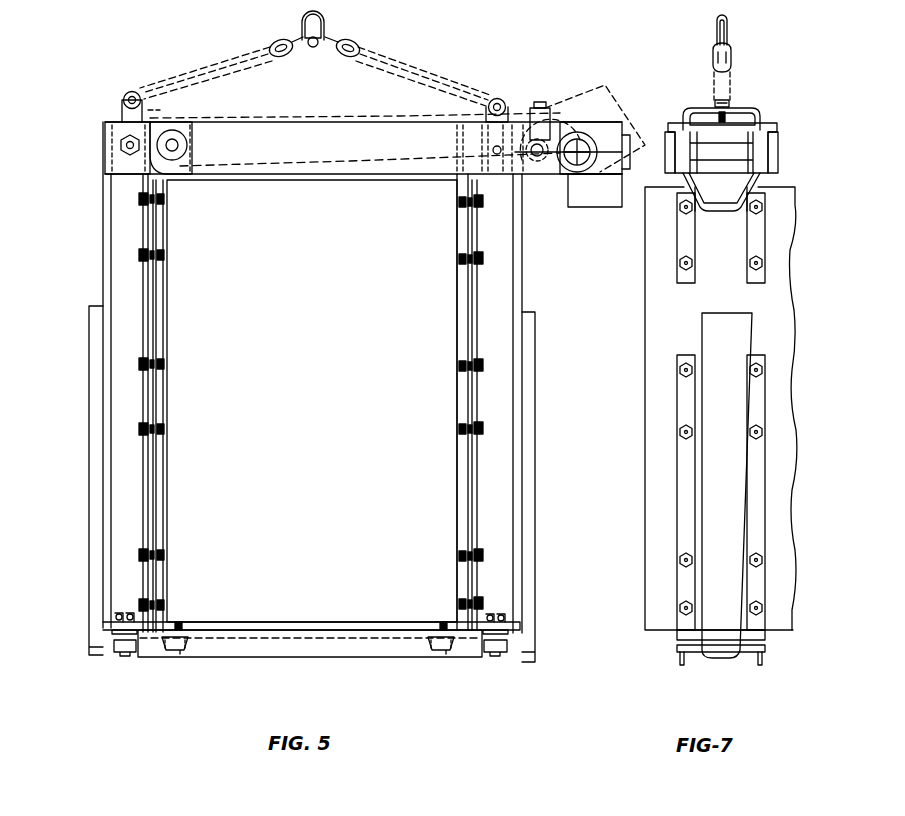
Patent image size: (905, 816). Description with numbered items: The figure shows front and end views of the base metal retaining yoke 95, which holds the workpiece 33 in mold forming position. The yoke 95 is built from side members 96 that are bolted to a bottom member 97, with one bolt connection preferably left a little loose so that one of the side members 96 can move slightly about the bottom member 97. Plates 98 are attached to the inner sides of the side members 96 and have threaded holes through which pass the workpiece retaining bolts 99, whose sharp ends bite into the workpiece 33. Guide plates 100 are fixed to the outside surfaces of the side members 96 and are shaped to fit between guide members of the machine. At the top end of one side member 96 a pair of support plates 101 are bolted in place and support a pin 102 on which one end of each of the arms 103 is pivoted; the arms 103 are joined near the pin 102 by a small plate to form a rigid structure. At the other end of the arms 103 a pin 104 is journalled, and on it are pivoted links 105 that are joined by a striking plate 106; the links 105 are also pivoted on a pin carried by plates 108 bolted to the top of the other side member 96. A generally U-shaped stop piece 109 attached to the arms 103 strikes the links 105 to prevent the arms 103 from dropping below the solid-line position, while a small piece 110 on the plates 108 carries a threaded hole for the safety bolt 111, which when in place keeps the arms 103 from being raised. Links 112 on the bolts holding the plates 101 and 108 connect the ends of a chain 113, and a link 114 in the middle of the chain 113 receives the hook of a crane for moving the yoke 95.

In FIG. 5, the workpiece 33 is at (450, 302).
In FIG. 5, the yoke 95 is at (100, 677).
In FIG. 5, the side members 96 is at (111, 506).
In FIG. 5, the bottom member 97 is at (370, 657).
In FIG. 5, the plates 98 is at (150, 514).
In FIG. 5, the workpiece retaining bolts 99 is at (476, 553).
In FIG. 7, the workpiece retaining bolts 99 is at (762, 431).
In FIG. 5, the guide plates 100 is at (100, 420).
In FIG. 7, the guide plates 100 is at (710, 477).
In FIG. 5, the support plates 101 is at (118, 118).
In FIG. 5, the pin 102 is at (174, 142).
In FIG. 5, the arms 103 is at (340, 123).
In FIG. 7, the arms 103 is at (762, 172).
In FIG. 5, the pin 104 is at (584, 144).
In FIG. 7, the pin 104 is at (710, 162).
In FIG. 5, the links 105 is at (640, 170).
In FIG. 7, the links 105 is at (775, 172).
In FIG. 5, the striking plate 106 is at (598, 207).
In FIG. 7, the striking plate 106 is at (780, 185).
In FIG. 5, the plates 108 is at (524, 178).
In FIG. 7, the plates 108 is at (758, 140).
In FIG. 5, the stop piece 109 is at (560, 118).
In FIG. 7, the stop piece 109 is at (745, 113).
In FIG. 7, the small piece 110 is at (752, 120).
In FIG. 5, the safety bolt 111 is at (540, 100).
In FIG. 7, the safety bolt 111 is at (730, 102).
In FIG. 5, the links 112 is at (128, 92).
In FIG. 5, the chain 113 is at (380, 58).
In FIG. 7, the chain 113 is at (728, 75).
In FIG. 5, the link 114 is at (324, 25).
In FIG. 7, the link 114 is at (727, 30).